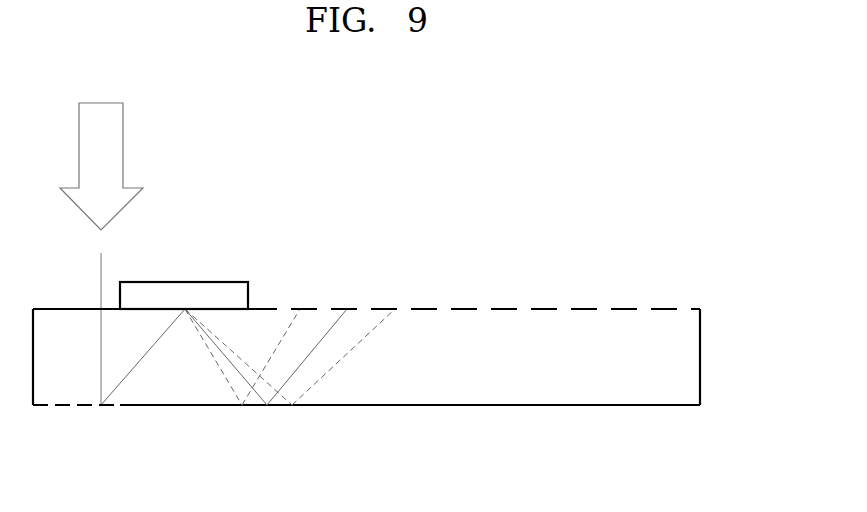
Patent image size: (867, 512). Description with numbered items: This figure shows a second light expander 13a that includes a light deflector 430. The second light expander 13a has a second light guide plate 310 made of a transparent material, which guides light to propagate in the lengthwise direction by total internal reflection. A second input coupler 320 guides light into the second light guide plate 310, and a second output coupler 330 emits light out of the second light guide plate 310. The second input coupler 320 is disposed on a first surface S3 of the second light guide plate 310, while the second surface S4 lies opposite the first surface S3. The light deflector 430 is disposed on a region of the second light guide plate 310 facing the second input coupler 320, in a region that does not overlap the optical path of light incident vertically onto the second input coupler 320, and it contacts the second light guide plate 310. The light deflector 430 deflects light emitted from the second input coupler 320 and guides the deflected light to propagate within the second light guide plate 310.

The second light expander 13a is at (711, 151).
The second light guide plate 310 is at (693, 357).
The second input coupler 320 is at (65, 406).
The second output coupler 330 is at (555, 309).
The light deflector 430 is at (185, 290).
The first surface S3 is at (260, 309).
The second surface S4 is at (568, 405).